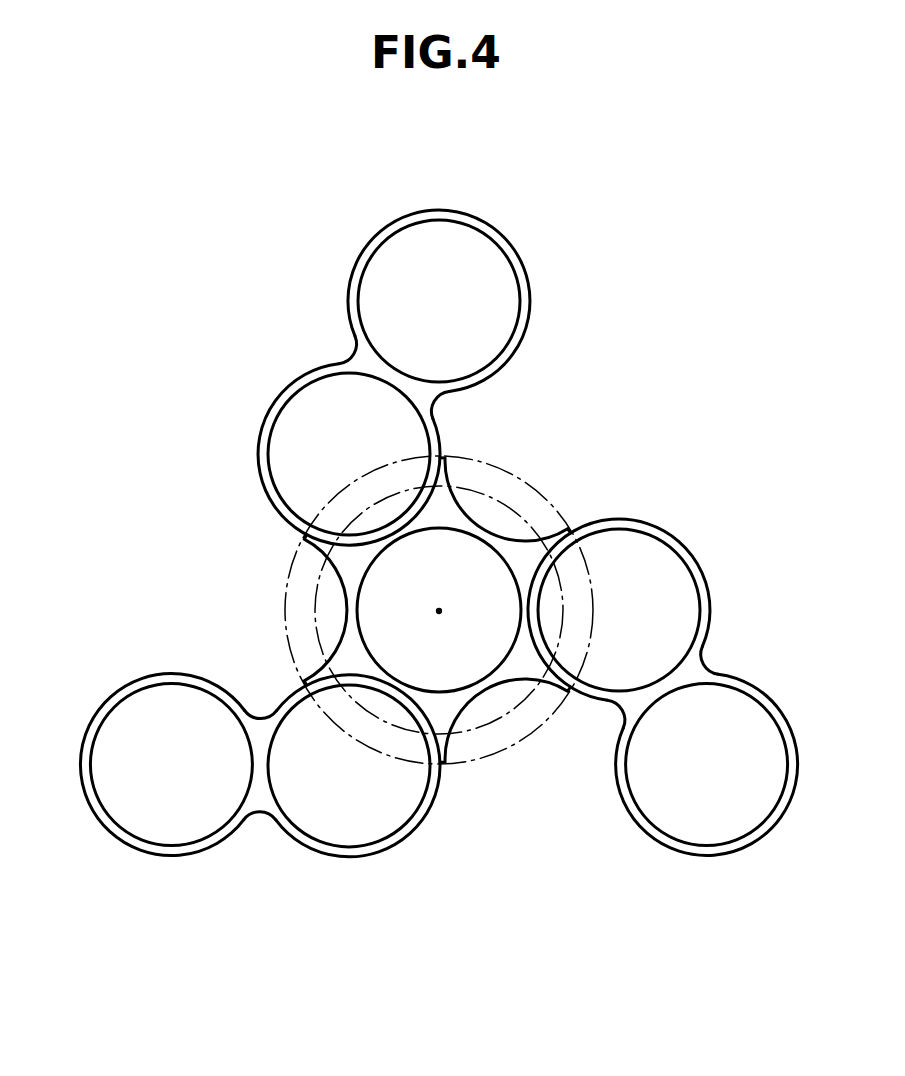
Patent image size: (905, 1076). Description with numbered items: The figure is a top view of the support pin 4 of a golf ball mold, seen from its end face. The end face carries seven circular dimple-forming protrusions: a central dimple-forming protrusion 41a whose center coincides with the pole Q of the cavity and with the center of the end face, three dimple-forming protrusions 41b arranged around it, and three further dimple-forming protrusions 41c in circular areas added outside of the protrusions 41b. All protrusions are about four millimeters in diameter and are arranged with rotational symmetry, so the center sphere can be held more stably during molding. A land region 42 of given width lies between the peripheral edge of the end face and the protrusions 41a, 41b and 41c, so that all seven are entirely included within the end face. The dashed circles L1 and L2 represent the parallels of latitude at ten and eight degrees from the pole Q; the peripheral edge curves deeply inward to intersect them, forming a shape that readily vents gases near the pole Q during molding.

The support pin 4 is at (268, 317).
The land region 42 is at (433, 503).
The dimple-forming protrusion 41a is at (475, 580).
The dimple-forming protrusions 41b is at (302, 453).
The dimple-forming protrusions 41c is at (497, 278).
The pole Q is at (438, 610).
The circle L1 is at (533, 730).
The circle L2 is at (500, 713).